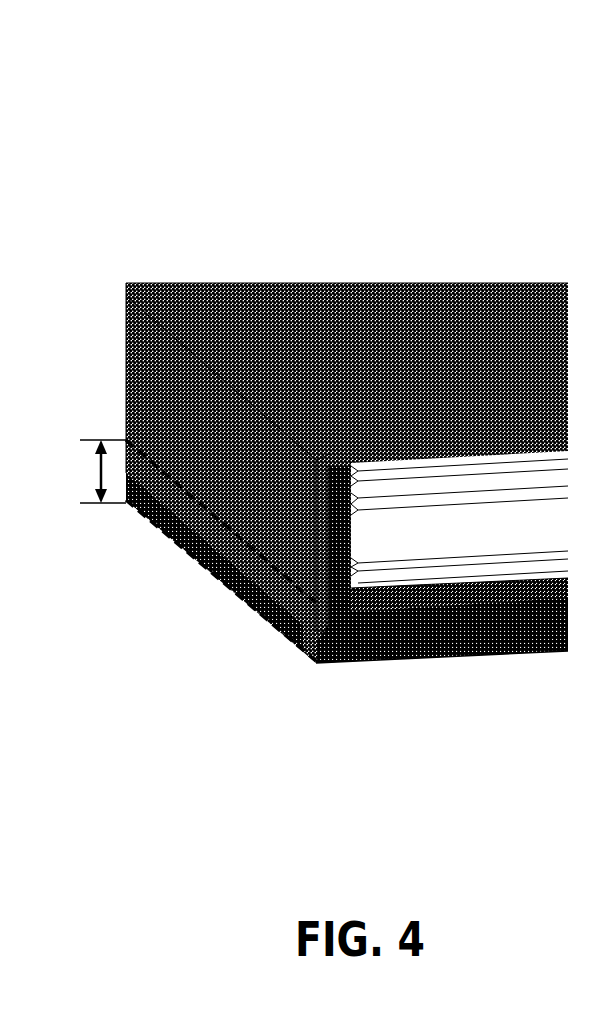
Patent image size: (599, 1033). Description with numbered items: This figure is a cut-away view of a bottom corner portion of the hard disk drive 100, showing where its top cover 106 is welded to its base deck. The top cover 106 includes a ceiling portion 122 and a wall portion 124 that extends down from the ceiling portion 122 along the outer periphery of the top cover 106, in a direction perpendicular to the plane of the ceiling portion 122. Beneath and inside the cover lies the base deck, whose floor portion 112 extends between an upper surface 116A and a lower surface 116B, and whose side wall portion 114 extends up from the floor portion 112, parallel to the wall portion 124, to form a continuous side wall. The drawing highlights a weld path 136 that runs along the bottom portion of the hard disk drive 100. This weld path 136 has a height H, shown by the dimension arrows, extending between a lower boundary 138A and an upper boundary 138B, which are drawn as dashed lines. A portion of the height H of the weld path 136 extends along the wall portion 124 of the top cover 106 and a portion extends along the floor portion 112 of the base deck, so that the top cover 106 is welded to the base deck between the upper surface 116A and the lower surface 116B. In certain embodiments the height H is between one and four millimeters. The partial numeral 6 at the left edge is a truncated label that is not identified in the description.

The hard disk drive 100 is at (203, 104).
The top cover 106 is at (433, 257).
The ceiling portion 122 is at (288, 287).
The wall portion 124 is at (135, 353).
The floor portion 112 is at (388, 630).
The side wall portion 114 is at (330, 617).
The upper surface 116A is at (510, 593).
The lower surface 116B is at (443, 648).
The weld path 136 is at (155, 509).
The lower boundary 138A is at (238, 588).
The upper boundary 138B is at (287, 583).
The height H is at (88, 470).
The partial numeral (126) 6 is at (12, 239).